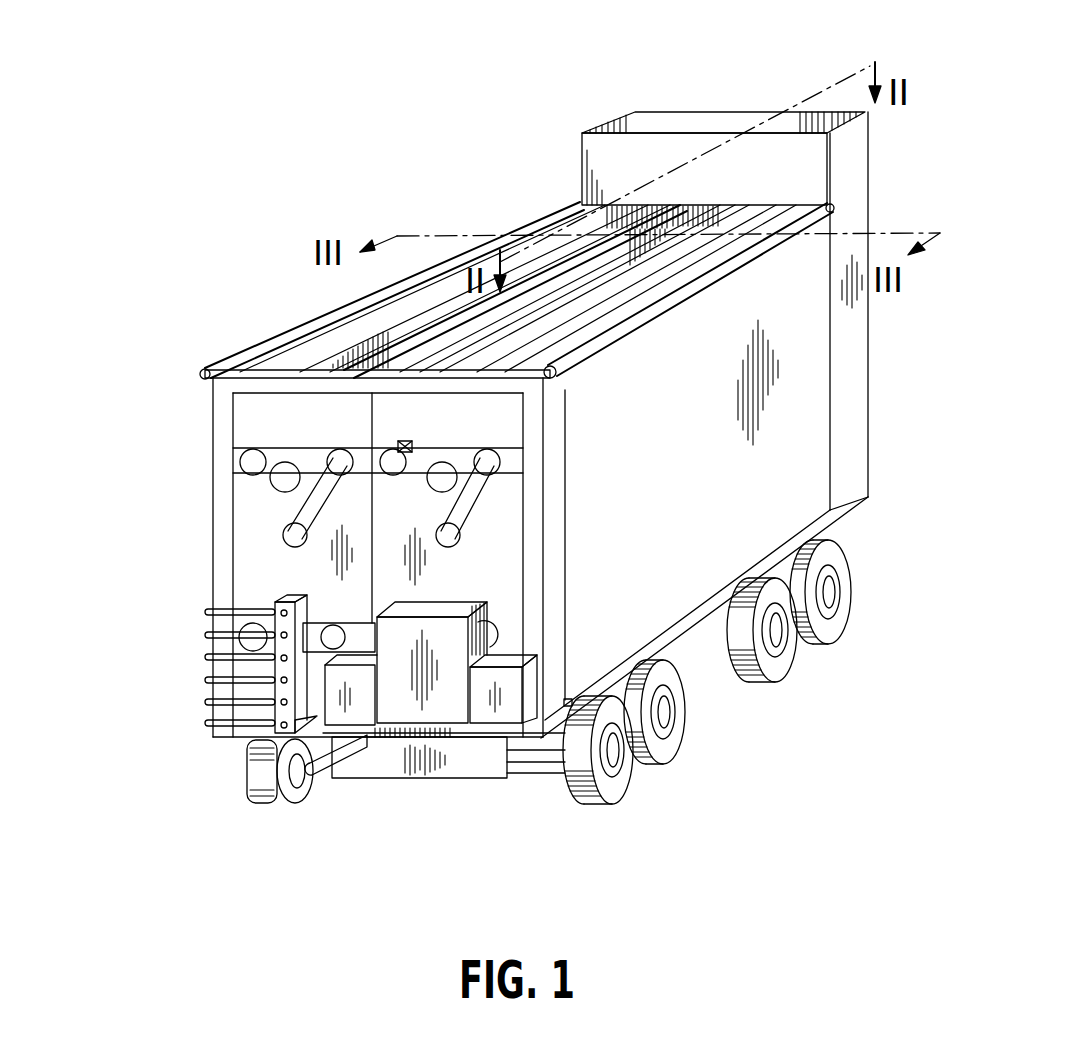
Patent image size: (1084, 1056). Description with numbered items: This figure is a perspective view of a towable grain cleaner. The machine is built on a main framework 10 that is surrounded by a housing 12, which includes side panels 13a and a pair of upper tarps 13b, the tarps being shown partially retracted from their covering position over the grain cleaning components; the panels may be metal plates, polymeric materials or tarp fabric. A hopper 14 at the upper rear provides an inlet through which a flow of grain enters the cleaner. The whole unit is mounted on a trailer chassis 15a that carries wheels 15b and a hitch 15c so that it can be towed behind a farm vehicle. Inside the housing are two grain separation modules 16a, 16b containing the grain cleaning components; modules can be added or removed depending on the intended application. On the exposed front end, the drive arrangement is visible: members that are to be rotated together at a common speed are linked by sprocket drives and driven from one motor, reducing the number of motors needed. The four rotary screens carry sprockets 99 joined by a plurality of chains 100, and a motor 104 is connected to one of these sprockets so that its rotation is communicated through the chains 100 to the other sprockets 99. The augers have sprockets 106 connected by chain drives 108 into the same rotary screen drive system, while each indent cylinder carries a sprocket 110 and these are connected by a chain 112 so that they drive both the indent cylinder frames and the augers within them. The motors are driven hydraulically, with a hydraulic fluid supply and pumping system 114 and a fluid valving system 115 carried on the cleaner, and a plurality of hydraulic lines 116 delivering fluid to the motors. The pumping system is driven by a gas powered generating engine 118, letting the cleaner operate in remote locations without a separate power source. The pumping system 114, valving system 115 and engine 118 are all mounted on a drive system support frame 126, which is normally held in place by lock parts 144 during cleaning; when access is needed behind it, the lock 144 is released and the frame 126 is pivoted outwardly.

The main framework 10 is at (693, 620).
The housing 12 is at (805, 410).
The side panels 13a is at (803, 353).
The upper tarps 13b is at (357, 343).
The hopper 14 is at (730, 115).
The trailer chassis 15a is at (484, 744).
The wheels 15b is at (677, 748).
The hitch 15c is at (314, 774).
The grain separation module 16a is at (662, 245).
The grain separation module 16b is at (596, 245).
The sprockets 99 is at (328, 448).
The chains 100 is at (338, 452).
The motor 104 is at (412, 446).
The sprockets 106 is at (290, 532).
The chain drives 108 is at (297, 507).
The sprocket 110 is at (253, 645).
The chain 112 is at (360, 622).
The hydraulic fluid supply and pumping system 114 is at (355, 708).
The fluid valving system 115 is at (277, 690).
The hydraulic lines 116 is at (213, 657).
The gas powered generating engine 118 is at (443, 700).
The drive system support frame 126 is at (555, 612).
The lock parts 144 is at (568, 704).